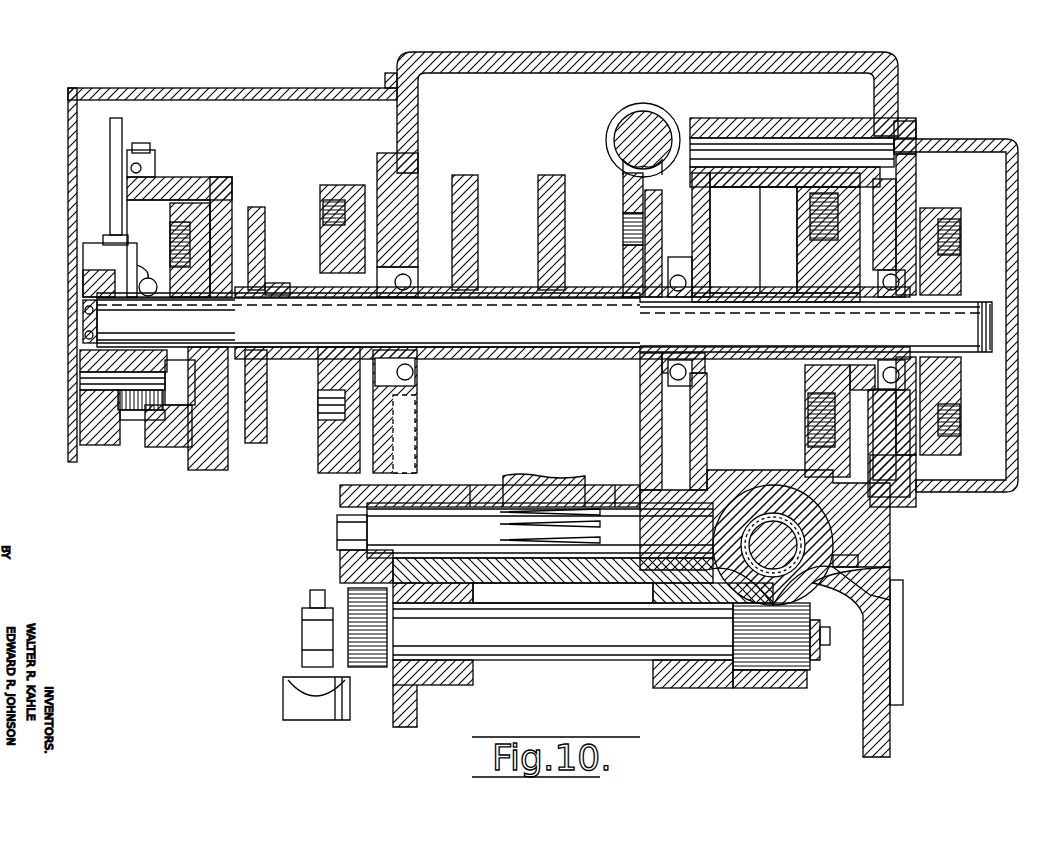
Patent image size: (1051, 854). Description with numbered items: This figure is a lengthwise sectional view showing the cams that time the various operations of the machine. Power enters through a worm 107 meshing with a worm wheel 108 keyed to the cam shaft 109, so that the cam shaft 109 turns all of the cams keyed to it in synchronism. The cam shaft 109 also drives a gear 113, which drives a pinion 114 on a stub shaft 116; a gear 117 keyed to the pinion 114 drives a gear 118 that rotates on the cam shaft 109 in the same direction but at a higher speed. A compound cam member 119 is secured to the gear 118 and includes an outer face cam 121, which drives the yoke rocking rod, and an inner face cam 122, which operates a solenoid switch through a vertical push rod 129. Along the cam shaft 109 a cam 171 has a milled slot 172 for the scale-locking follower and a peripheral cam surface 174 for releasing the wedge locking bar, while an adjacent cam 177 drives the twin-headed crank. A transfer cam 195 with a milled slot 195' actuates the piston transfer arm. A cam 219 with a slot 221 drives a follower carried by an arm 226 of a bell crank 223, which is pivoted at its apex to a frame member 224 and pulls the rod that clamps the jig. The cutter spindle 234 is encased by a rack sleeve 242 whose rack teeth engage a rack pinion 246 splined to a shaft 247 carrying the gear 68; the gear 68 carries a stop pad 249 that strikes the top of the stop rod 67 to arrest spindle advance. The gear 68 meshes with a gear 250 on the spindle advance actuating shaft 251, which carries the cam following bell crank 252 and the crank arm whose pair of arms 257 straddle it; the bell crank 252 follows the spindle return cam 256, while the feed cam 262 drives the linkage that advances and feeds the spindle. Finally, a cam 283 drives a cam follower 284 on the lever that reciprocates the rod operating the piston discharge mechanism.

The stop rod 67 is at (302, 690).
The gear 68 is at (378, 660).
The worm 107 is at (646, 118).
The worm wheel 108 is at (623, 207).
The cam shaft 109 is at (755, 345).
The gear 113 is at (108, 330).
The pinion 114 is at (100, 430).
The stub shaft 116 is at (95, 382).
The gear 117 is at (128, 415).
The gear 118 is at (140, 283).
The compound cam member 119 is at (180, 432).
The outer face cam 121 is at (145, 425).
The inner face cam 122 is at (172, 240).
The vertical push rod 129 is at (120, 126).
The cam 171 is at (318, 460).
The milled slot 172 is at (320, 407).
The peripheral cam surface 174 is at (340, 185).
The cam 177 is at (290, 226).
The transfer cam 195 is at (938, 418).
The milled slot 195' is at (943, 225).
The cam 219 is at (807, 383).
The slot 221 is at (812, 215).
The bell crank 223 is at (775, 118).
The frame member 224 is at (898, 92).
The arm 226 is at (775, 270).
The spindle 234 is at (770, 530).
The rack sleeve 242 is at (858, 558).
The rack pinion 246 is at (818, 686).
The shaft 247 is at (566, 650).
The stop pad 249 is at (308, 668).
The gear 250 is at (340, 565).
The spindle advance actuating shaft 251 is at (347, 525).
The cam following bell crank 252 is at (560, 465).
The spindle return cam 256 is at (478, 205).
The arms 257 is at (487, 485).
The feed cam 262 is at (565, 237).
The cam 283 is at (205, 470).
The cam follower 284 is at (152, 177).